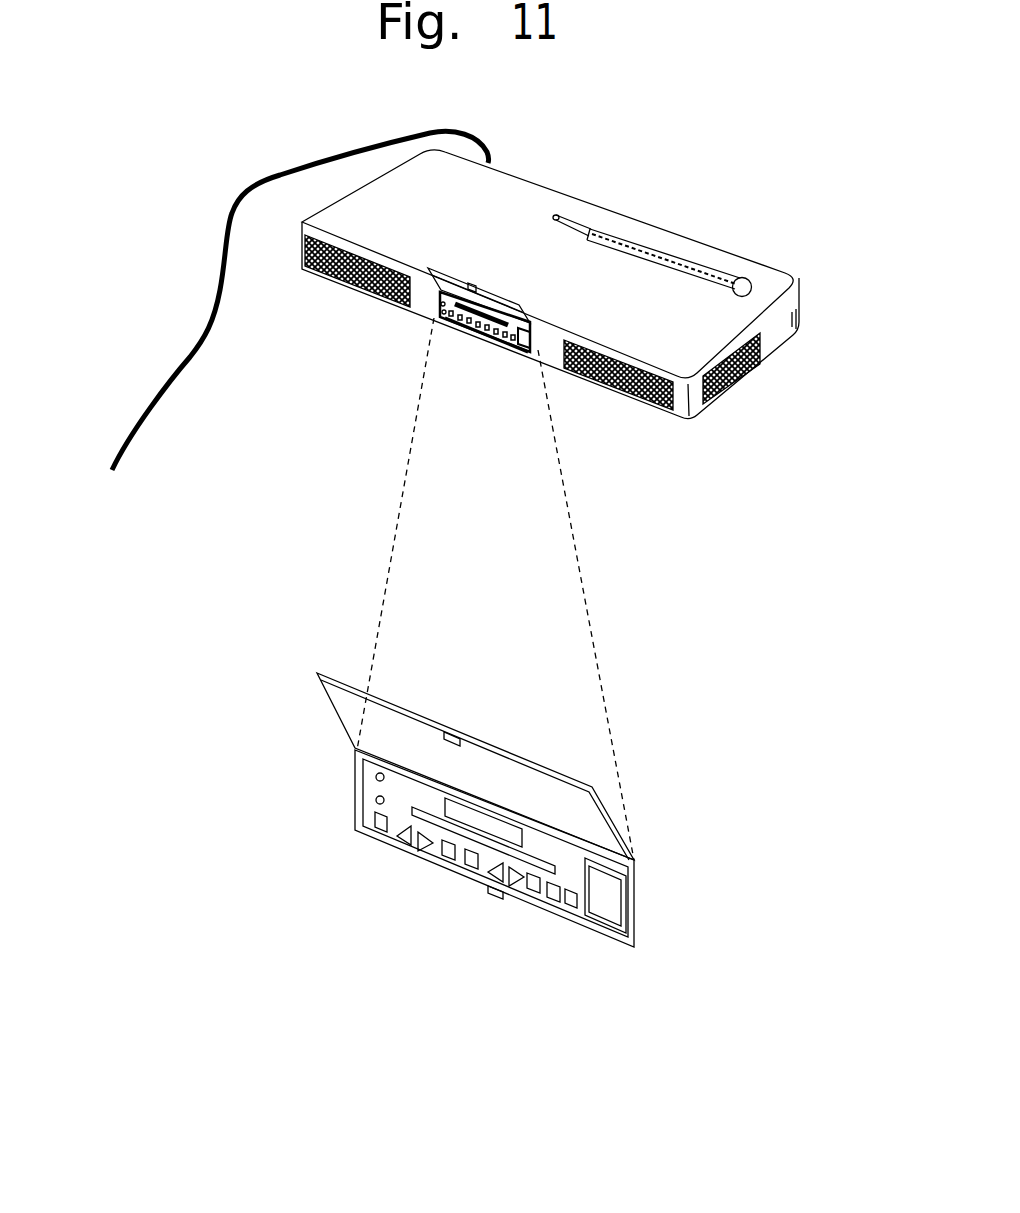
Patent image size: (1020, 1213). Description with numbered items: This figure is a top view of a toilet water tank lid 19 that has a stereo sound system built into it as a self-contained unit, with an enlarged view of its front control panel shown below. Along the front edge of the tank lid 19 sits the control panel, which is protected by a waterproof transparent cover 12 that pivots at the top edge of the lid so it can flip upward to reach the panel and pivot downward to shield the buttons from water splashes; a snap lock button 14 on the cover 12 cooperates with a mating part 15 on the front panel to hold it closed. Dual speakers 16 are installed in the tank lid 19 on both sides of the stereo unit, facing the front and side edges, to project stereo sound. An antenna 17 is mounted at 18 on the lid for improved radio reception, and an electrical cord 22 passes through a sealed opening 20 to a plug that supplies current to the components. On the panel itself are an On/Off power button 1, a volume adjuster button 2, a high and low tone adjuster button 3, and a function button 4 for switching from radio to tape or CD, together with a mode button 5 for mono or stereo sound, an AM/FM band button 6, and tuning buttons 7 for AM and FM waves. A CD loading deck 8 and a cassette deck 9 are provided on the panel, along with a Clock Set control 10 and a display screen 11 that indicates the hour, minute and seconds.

The On/Off power button 1 is at (445, 317).
The volume adjuster button 2 is at (445, 330).
The high and low tone adjuster button 3 is at (448, 852).
The function button 4 is at (515, 877).
The mode button 5 is at (535, 882).
The AM/FM band button 6 is at (553, 892).
The tuning buttons 7 is at (572, 900).
The CD loading deck 8 is at (490, 314).
The cassette deck 9 is at (507, 326).
The Clock Set control 10 is at (440, 305).
The display screen 11 is at (610, 906).
The waterproof transparent cover 12 is at (460, 280).
The snap lock button 14 is at (493, 260).
The mating part 15 is at (483, 336).
The speakers 16 is at (316, 266).
The antenna 17 is at (645, 248).
The antenna mounting 18 is at (740, 278).
The tank lid 19 is at (788, 287).
The sealed opening 20 is at (502, 155).
The electrical cord 22 is at (208, 318).